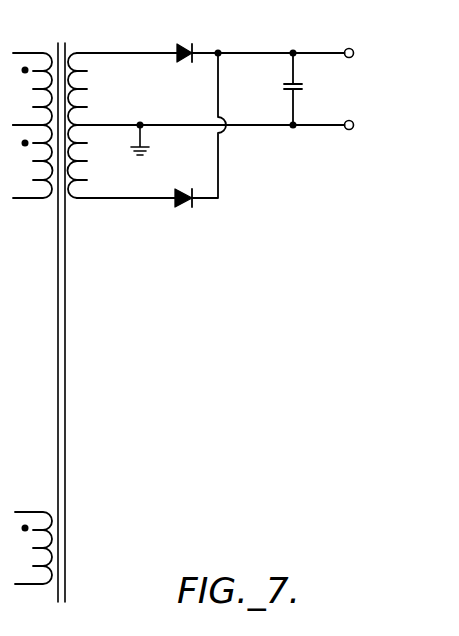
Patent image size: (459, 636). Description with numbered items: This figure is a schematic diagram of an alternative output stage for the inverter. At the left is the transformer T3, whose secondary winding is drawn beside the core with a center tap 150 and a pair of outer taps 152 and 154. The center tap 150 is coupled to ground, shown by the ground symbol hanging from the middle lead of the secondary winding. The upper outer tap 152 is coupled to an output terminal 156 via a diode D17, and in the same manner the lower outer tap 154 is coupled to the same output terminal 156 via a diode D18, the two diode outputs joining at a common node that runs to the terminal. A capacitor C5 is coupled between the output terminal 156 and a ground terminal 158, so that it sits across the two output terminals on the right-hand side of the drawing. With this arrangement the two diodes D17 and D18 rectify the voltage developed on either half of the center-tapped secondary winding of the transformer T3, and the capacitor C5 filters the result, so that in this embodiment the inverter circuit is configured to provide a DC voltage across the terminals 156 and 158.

The transformer T3 is at (66, 400).
The outer tap 152 is at (76, 53).
The center tap 150 is at (95, 125).
The outer tap 154 is at (85, 198).
The diode D17 is at (183, 44).
The diode D18 is at (184, 206).
The capacitor C5 is at (302, 81).
The output terminal 156 is at (320, 53).
The ground terminal 158 is at (322, 125).